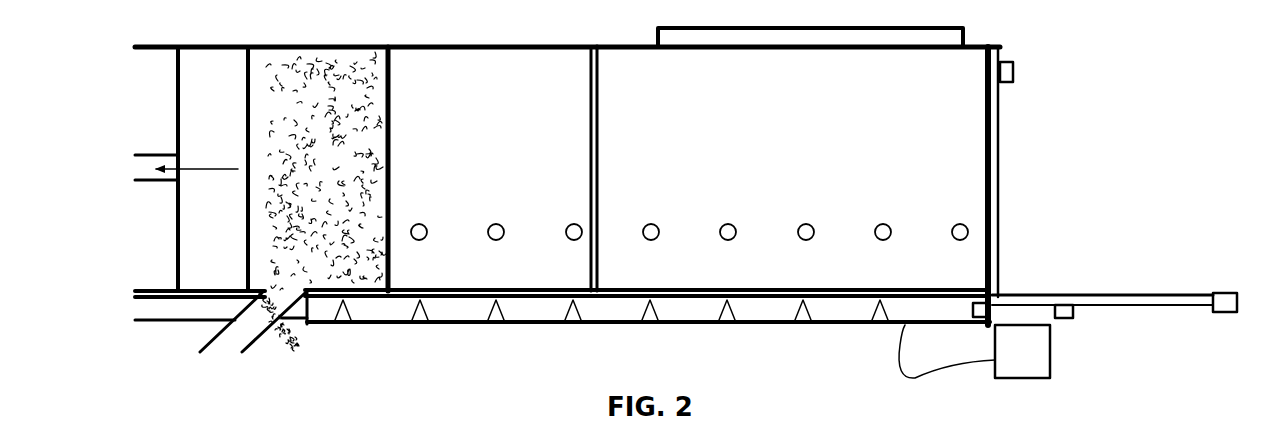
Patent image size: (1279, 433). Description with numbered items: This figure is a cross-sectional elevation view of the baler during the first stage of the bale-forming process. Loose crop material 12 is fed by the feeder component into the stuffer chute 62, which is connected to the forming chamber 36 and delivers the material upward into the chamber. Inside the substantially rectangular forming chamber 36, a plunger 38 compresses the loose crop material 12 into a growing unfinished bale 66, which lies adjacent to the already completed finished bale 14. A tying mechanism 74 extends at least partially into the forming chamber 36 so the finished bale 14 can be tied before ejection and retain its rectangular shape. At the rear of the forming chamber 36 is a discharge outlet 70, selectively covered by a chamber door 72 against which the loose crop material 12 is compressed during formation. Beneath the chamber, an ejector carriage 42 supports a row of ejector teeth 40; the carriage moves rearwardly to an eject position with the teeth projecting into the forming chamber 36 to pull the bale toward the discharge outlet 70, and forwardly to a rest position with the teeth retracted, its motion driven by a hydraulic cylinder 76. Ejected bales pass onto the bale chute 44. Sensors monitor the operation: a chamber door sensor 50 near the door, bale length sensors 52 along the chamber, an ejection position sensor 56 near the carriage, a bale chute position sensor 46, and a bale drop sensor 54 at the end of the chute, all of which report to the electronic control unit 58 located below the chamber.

The loose crop material 12 is at (355, 55).
The finished bale 14 is at (764, 94).
The forming chamber 36 is at (107, 110).
The plunger 38 is at (195, 94).
The ejector teeth 40 is at (653, 331).
The ejector carriage 42 is at (546, 312).
The bale chute 44 is at (1152, 314).
The bale chute position sensor 46 is at (1062, 320).
The chamber door sensor 50 is at (1015, 72).
The bale length sensors 52 is at (817, 225).
The bale drop sensor 54 is at (1232, 304).
The ejection position sensor 56 is at (976, 320).
The electronic control unit 58 is at (1004, 371).
The stuffer chute 62 is at (272, 338).
The unfinished bale 66 is at (474, 94).
The discharge outlet 70 is at (1048, 148).
The chamber door 72 is at (995, 248).
The tying mechanism 74 is at (797, 38).
The hydraulic cylinder 76 is at (160, 318).